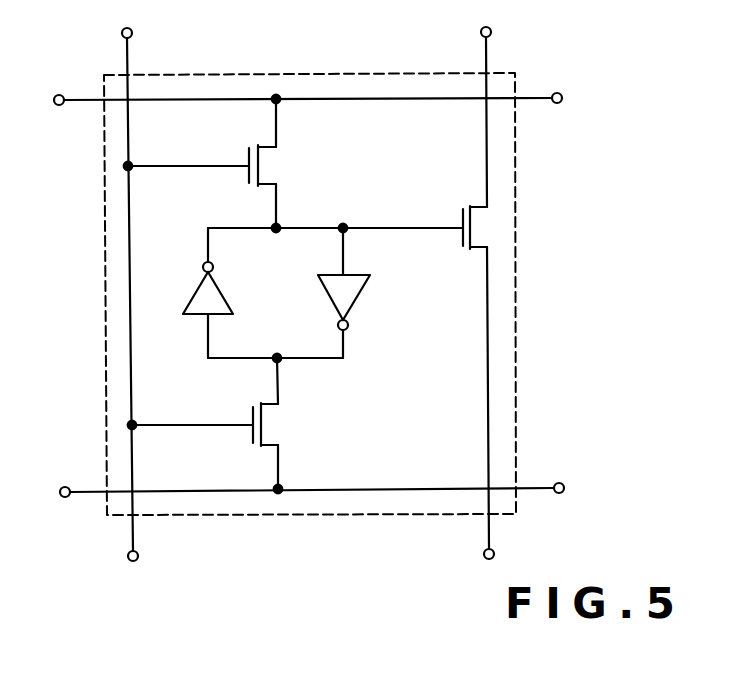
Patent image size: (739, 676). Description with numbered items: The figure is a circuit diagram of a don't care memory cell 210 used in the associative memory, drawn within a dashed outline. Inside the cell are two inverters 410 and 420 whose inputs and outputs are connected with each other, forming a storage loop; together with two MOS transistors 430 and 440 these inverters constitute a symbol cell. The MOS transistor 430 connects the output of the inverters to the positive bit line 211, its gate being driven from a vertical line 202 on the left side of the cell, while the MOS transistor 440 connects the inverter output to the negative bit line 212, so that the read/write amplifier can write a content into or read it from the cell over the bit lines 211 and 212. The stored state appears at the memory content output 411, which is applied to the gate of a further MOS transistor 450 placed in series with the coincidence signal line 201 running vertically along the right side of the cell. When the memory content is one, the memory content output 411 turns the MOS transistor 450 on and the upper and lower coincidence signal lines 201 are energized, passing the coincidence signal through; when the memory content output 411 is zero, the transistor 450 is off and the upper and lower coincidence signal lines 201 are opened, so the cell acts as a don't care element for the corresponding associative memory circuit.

The coincidence signal line 201 is at (483, 50).
The power supply line 202 is at (136, 535).
The don't care memory cell 210 is at (516, 147).
The bit line 211 is at (75, 107).
The bit line 212 is at (85, 485).
The inverter 410 is at (224, 286).
The memory content output 411 is at (412, 223).
The inverter 420 is at (360, 300).
The MOS transistor 430 is at (268, 164).
The MOS transistor 440 is at (272, 424).
The MOS transistor 450 is at (485, 226).